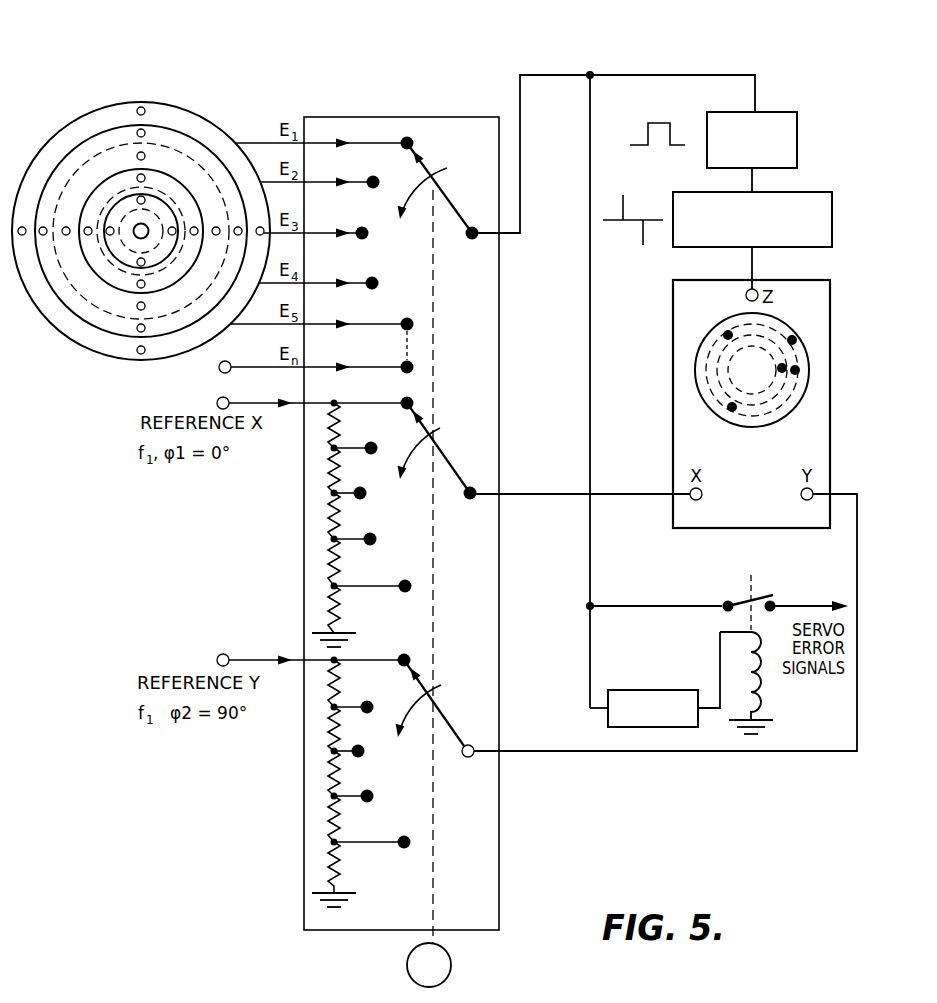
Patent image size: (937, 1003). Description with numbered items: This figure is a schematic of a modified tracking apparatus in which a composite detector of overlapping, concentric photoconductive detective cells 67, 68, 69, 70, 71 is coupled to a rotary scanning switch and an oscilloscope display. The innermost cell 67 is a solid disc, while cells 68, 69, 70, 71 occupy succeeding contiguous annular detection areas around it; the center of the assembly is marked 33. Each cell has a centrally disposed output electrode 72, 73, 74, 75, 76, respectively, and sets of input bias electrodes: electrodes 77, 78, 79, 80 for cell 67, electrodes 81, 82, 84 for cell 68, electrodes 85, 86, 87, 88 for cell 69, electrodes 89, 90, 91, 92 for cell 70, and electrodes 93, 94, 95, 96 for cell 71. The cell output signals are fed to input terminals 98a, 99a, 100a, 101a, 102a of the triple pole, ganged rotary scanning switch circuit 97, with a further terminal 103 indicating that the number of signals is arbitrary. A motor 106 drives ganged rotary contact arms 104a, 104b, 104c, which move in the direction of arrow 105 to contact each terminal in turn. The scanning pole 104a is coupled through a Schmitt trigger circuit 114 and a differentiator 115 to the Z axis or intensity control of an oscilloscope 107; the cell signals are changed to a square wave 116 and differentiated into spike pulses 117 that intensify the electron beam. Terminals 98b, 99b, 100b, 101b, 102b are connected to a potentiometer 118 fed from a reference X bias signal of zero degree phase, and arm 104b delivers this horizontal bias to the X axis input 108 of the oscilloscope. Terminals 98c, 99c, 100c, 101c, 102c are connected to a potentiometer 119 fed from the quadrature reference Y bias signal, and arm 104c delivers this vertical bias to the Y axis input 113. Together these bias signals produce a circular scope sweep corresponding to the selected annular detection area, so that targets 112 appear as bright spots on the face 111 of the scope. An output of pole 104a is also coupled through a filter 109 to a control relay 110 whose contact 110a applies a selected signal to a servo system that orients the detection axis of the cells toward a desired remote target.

The shaft 33 is at (135, 236).
The photoconductive detective cell 67 is at (152, 200).
The photoconductive detective cell 68 is at (162, 183).
The photoconductive detective cell 69 is at (180, 170).
The photoconductive detective cell 70 is at (195, 157).
The photoconductive detective cell 71 is at (210, 143).
The output electrode 72 is at (113, 255).
The output electrode 73 is at (111, 263).
The output electrode 74 is at (104, 281).
The output electrode 75 is at (106, 291).
The output electrode 76 is at (105, 314).
The input bias electrode 77 is at (175, 228).
The input bias electrode 78 is at (138, 265).
The input bias electrode 79 is at (122, 251).
The input bias electrode 80 is at (138, 197).
The input bias electrode 81 is at (197, 228).
The input bias electrode 82 is at (139, 287).
The input bias electrode 84 is at (138, 175).
The input bias electrode 85 is at (219, 228).
The input bias electrode 86 is at (139, 309).
The input bias electrode 87 is at (64, 227).
The input bias electrode 88 is at (138, 153).
The input bias electrode 89 is at (236, 235).
The input bias electrode 90 is at (140, 331).
The input bias electrode 91 is at (42, 227).
The input bias electrode 92 is at (138, 130).
The input bias electrode 93 is at (258, 235).
The input bias electrode 94 is at (140, 353).
The input bias electrode 95 is at (21, 227).
The input bias electrode 96 is at (138, 108).
The rotary scanning switch circuit 97 is at (397, 122).
The input terminal 98a is at (412, 140).
The input terminal 99a is at (369, 176).
The input terminal 100a is at (357, 228).
The input terminal 101a is at (366, 278).
The input terminal 102a is at (401, 320).
The input terminal 103 is at (401, 364).
The terminal 98b is at (402, 399).
The terminal 99b is at (370, 441).
The terminal 100b is at (361, 486).
The terminal 101b is at (376, 544).
The terminal 102b is at (402, 593).
The terminal 98c is at (400, 655).
The terminal 99c is at (367, 700).
The terminal 100c is at (359, 744).
The terminal 101c is at (373, 801).
The terminal 102c is at (400, 849).
The rotary contact arm 104a is at (453, 205).
The rotary contact arm 104b is at (457, 473).
The rotary contact arm 104c is at (455, 733).
The arrow 105 is at (418, 190).
The motor 106 is at (452, 965).
The oscilloscope 107 is at (830, 290).
The X input terminal 108 is at (702, 498).
The filter 109 is at (665, 690).
The control relay 110 is at (762, 683).
The relay contact 110a is at (740, 599).
The face of oscilloscope 111 is at (790, 328).
The targets 112 is at (726, 333).
The Y input terminal 113 is at (802, 490).
The Schmitt Trigger circuit 114 is at (795, 115).
The differentiator 115 is at (820, 198).
The square wave 116 is at (648, 138).
The spike pulses 117 is at (630, 205).
The potentiometer 118 is at (320, 458).
The potentiometer 119 is at (313, 737).